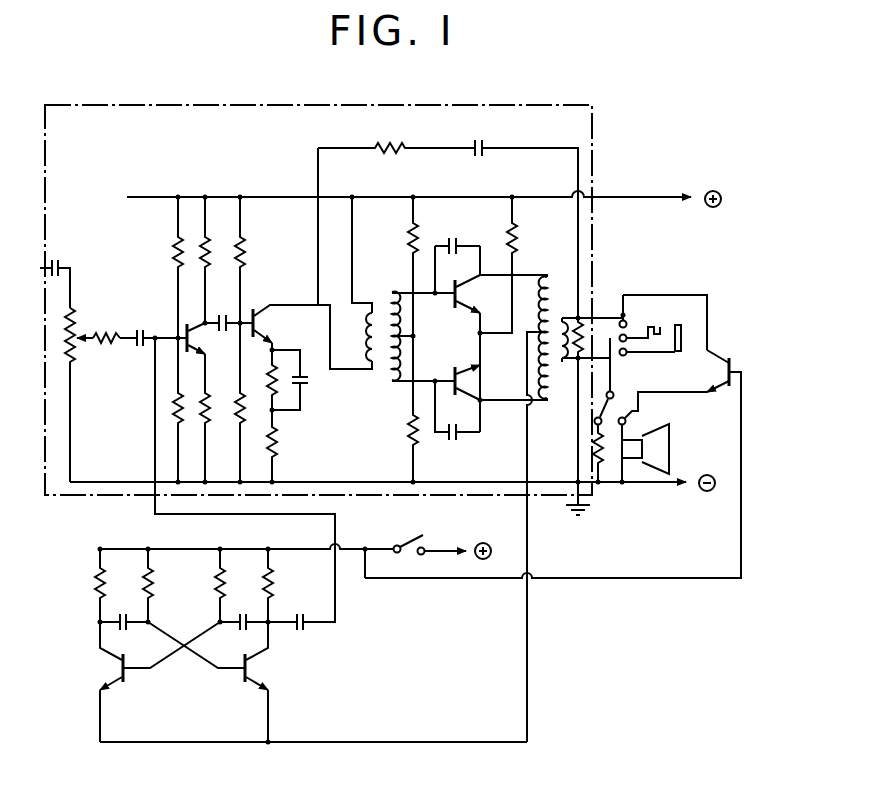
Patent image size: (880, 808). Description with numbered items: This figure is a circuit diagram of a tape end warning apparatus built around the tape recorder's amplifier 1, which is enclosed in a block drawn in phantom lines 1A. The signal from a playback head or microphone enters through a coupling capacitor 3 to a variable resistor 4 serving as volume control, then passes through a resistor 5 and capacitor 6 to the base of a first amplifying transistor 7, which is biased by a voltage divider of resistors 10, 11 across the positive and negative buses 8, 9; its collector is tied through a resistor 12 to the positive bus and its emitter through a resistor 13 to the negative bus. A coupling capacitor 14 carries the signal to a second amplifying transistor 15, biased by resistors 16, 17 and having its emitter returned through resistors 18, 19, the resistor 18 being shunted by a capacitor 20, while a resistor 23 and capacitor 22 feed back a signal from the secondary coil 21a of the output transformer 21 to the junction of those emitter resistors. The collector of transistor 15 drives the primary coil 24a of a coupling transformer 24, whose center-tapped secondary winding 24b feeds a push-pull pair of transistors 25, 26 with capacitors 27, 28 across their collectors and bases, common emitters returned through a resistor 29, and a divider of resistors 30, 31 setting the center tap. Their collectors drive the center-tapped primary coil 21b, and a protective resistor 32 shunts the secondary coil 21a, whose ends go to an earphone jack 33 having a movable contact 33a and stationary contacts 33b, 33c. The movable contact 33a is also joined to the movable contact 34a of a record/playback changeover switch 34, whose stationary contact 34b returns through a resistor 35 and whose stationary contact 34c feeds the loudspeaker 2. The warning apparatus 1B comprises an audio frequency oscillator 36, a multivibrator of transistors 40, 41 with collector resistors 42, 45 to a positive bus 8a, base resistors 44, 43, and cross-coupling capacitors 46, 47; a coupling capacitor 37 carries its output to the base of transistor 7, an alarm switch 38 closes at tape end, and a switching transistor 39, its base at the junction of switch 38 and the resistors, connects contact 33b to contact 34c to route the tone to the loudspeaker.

The amplifier 1 is at (268, 118).
The phantom lines 1A is at (592, 126).
The tape end warning apparatus 1B is at (114, 763).
The loudspeaker 2 is at (670, 446).
The coupling capacitor 3 is at (56, 262).
The variable resistor 4 is at (73, 316).
The resistor 5 is at (102, 342).
The capacitor 6 is at (140, 344).
The first amplifying transistor 7 is at (196, 340).
The positive bus 8 is at (639, 197).
The positive bus 8a is at (438, 549).
The negative bus 9 is at (664, 486).
The resistor 10 is at (176, 240).
The resistor 11 is at (180, 424).
The resistor 12 is at (204, 246).
The resistor 13 is at (204, 396).
The coupling capacitor 14 is at (222, 314).
The second amplifying transistor 15 is at (260, 309).
The resistor 16 is at (239, 248).
The resistor 17 is at (239, 396).
The resistor 18 is at (270, 380).
The resistor 19 is at (270, 441).
The capacitor 20 is at (300, 372).
The output transformer 21 is at (560, 293).
The secondary coil 21a is at (572, 312).
The primary coil 21b is at (538, 311).
The capacitor 22 is at (478, 139).
The resistor 23 is at (404, 146).
The coupling transformer 24 is at (384, 379).
The primary coil 24a is at (364, 360).
The secondary winding 24b is at (392, 293).
The transistor 25 is at (452, 299).
The transistor 26 is at (453, 378).
The capacitor 27 is at (454, 240).
The capacitor 28 is at (455, 441).
The resistor 29 is at (516, 244).
The resistor 30 is at (409, 232).
The resistor 31 is at (408, 430).
The protective resistor 32 is at (578, 360).
The earphone jack 33 is at (677, 312).
The movable contact 33a is at (619, 320).
The stationary contact 33b is at (626, 334).
The stationary contact 33c is at (628, 355).
The record/playback changeover switch 34 is at (605, 406).
The movable contact 34a is at (603, 404).
The stationary contact 34b is at (594, 423).
The stationary contact 34c is at (626, 417).
The resistor 35 is at (599, 466).
The audio frequency oscillator 36 is at (192, 699).
The coupling capacitor 37 is at (306, 631).
The alarm switch 38 is at (398, 545).
The switching transistor 39 is at (728, 357).
The transistor 40 is at (126, 675).
The transistor 41 is at (243, 675).
The resistor 42 is at (104, 592).
The resistor 43 is at (152, 592).
The resistor 44 is at (222, 592).
The resistor 45 is at (272, 592).
The capacitor 46 is at (125, 629).
The capacitor 47 is at (244, 629).